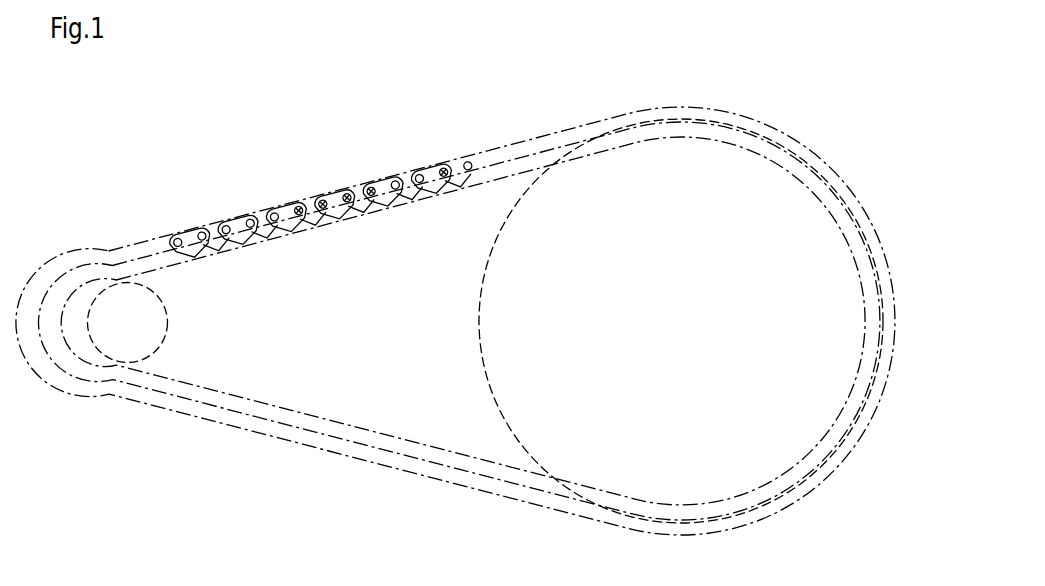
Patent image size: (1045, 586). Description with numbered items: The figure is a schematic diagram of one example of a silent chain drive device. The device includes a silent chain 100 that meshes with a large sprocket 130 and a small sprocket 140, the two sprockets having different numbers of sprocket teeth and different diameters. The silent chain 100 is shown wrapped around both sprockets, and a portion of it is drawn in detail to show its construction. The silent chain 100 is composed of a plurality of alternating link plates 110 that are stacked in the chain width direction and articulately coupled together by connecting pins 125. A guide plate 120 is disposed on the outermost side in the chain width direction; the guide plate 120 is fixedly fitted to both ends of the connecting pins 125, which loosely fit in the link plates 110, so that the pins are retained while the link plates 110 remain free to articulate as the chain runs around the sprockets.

The silent chain 100 is at (433, 79).
The link plate 110 is at (323, 193).
The guide plate 120 is at (437, 167).
The connecting pin 125 is at (299, 204).
The large sprocket 130 is at (708, 203).
The small sprocket 140 is at (130, 303).